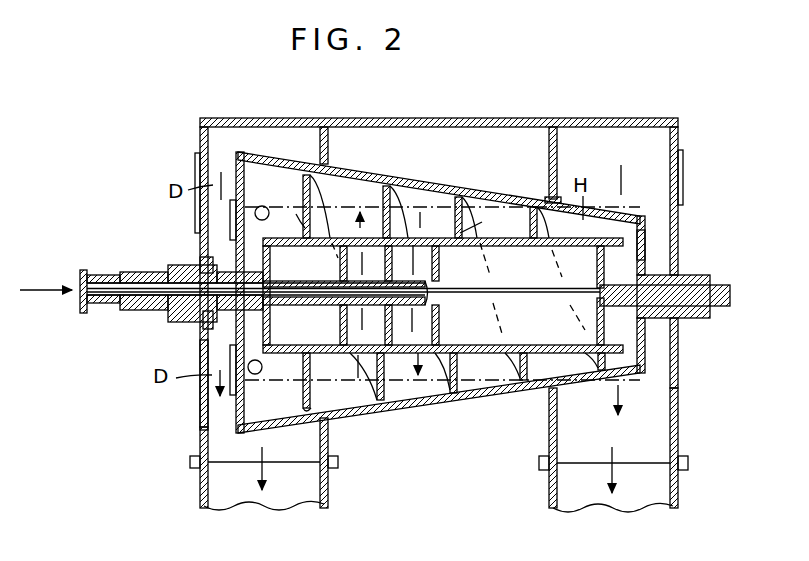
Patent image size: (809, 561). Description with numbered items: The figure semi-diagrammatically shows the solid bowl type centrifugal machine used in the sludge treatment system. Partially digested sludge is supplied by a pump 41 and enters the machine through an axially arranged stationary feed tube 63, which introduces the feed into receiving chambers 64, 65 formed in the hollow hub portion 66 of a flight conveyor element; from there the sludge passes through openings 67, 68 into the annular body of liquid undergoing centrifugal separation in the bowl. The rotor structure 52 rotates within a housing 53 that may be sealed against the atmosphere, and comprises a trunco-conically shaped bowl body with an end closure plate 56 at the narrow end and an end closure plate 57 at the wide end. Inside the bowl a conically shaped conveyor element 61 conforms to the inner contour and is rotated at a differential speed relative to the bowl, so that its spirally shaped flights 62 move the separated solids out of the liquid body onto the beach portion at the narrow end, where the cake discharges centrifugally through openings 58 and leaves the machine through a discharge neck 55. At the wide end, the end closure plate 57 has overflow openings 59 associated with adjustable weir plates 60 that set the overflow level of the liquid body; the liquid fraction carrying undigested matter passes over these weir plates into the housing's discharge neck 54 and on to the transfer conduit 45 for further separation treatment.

The pump 41 is at (43, 284).
The transfer conduit 45 is at (199, 485).
The rotor structure 52 is at (480, 192).
The housing 53 is at (530, 118).
The discharge neck 54 is at (199, 430).
The discharge neck 55 is at (680, 420).
The end closure plate 56 is at (645, 236).
The end closure plate 57 is at (205, 252).
The openings 58 is at (623, 212).
The overflow openings 59 is at (237, 213).
The adjustable weir plates 60 is at (221, 178).
The conically shaped conveyor element 61 is at (392, 212).
The spirally shaped flights 62 is at (303, 180).
The stationary feed tube 63 is at (97, 274).
The receiving chamber 64 is at (343, 260).
The receiving chamber 65 is at (425, 262).
The hollow hub portion 66 is at (284, 317).
The opening 67 is at (352, 318).
The opening 68 is at (433, 325).